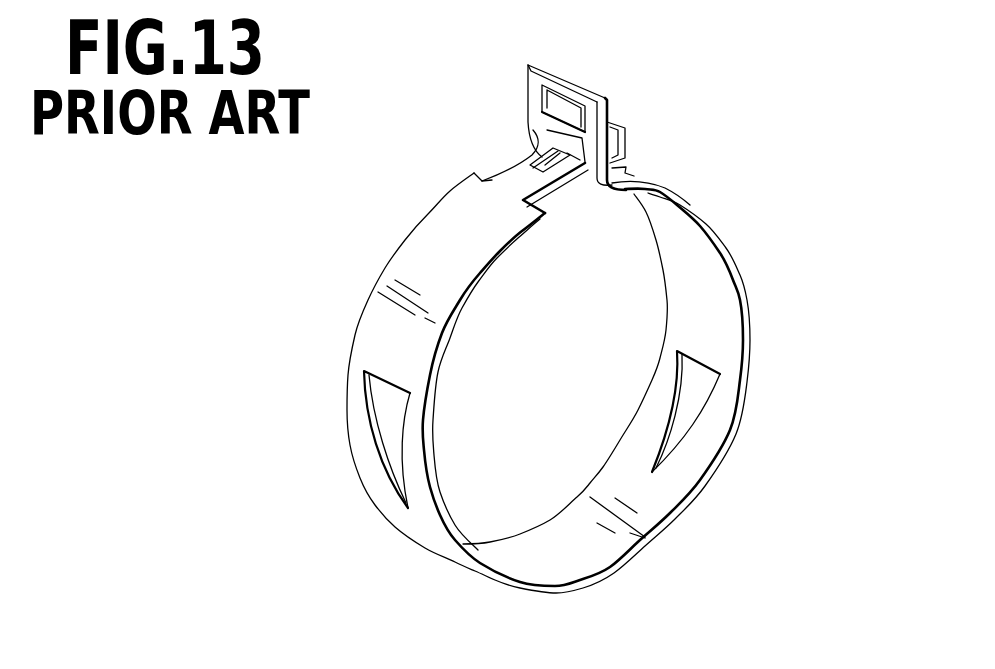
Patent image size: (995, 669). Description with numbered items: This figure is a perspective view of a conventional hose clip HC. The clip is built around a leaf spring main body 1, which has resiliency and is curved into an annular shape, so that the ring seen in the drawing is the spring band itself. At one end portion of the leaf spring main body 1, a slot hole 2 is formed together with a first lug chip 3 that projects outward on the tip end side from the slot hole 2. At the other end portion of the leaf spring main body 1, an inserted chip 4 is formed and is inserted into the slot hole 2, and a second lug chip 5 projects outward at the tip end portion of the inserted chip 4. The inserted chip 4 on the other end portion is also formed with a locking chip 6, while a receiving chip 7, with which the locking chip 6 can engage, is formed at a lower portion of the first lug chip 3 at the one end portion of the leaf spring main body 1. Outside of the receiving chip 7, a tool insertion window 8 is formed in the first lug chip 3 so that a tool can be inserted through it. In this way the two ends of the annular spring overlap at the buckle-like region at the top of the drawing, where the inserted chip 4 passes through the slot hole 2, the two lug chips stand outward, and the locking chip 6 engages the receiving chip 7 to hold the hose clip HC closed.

The leaf spring main body 1 is at (630, 533).
The slot hole 2 is at (622, 171).
The first lug chip 3 is at (593, 108).
The inserted chip 4 is at (474, 173).
The second lug chip 5 is at (625, 137).
The locking chip 6 is at (545, 170).
The receiving chip 7 is at (567, 166).
The tool insertion window 8 is at (557, 103).
The hose clip HC is at (775, 262).